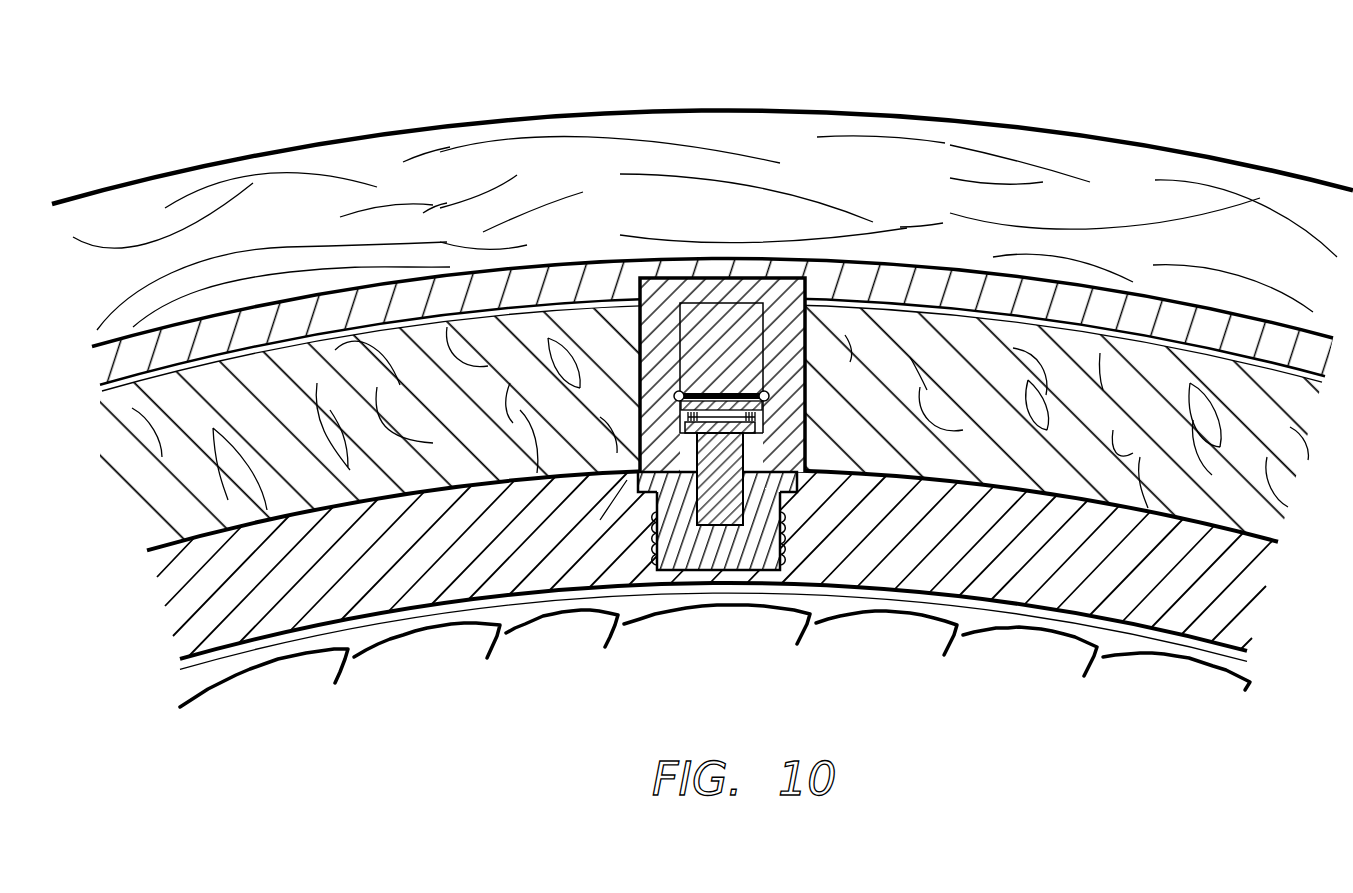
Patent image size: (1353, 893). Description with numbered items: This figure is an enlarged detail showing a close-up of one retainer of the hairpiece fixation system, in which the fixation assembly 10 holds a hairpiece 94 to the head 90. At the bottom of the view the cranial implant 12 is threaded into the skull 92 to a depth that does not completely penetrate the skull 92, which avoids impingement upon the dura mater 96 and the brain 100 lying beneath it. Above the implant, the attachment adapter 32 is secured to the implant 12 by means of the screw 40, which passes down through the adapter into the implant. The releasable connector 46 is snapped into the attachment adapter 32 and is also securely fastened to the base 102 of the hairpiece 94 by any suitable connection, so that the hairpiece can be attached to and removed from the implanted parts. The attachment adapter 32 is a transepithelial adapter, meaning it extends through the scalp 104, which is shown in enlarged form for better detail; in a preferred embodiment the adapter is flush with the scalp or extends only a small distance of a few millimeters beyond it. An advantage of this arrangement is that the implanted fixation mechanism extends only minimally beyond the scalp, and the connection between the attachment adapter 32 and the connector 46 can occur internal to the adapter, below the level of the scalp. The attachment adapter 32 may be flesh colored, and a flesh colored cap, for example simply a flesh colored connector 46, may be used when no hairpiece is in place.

The fixation assembly 10 is at (932, 287).
The cranial implant 12 is at (657, 570).
The attachment adapter 32 is at (637, 476).
The screw 40 is at (743, 527).
The releasable connector 46 is at (720, 290).
The head 90 is at (1237, 121).
The skull 92 is at (923, 567).
The hairpiece 94 is at (680, 158).
The dura mater 96 is at (843, 593).
The brain 100 is at (426, 733).
The base 102 is at (787, 348).
The scalp 104 is at (482, 397).